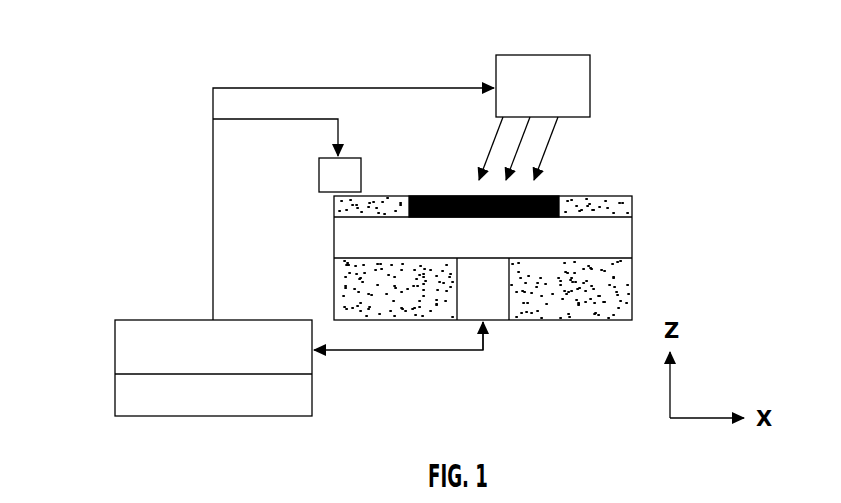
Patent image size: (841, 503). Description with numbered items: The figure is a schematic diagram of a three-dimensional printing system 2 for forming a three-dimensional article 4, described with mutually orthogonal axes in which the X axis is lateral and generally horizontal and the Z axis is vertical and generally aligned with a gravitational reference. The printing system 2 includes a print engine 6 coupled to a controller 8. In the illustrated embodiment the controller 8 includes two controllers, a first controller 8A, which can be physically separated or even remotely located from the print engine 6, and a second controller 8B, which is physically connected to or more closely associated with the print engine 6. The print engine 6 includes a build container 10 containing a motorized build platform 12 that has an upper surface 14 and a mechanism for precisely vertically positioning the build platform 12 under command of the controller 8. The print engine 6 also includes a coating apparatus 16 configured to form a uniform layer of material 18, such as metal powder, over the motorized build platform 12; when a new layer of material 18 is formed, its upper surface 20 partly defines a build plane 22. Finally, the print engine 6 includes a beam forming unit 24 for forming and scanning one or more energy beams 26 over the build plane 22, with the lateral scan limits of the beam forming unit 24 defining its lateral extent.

The 3D printing system 2 is at (628, 52).
The 3D article 4 is at (438, 196).
The 3D print engine 6 is at (699, 216).
The controller 8 is at (60, 332).
The first controller 8A is at (115, 386).
The second controller 8B is at (115, 343).
The build container 10 is at (633, 286).
The motorized build platform 12 is at (620, 241).
The upper surface 14 is at (597, 215).
The coating apparatus 16 is at (319, 170).
The layer of material 18 is at (387, 208).
The upper surface 20 is at (494, 175).
The build plane 22 is at (580, 196).
The beam forming unit 24 is at (538, 55).
The energy beams 26 is at (493, 145).